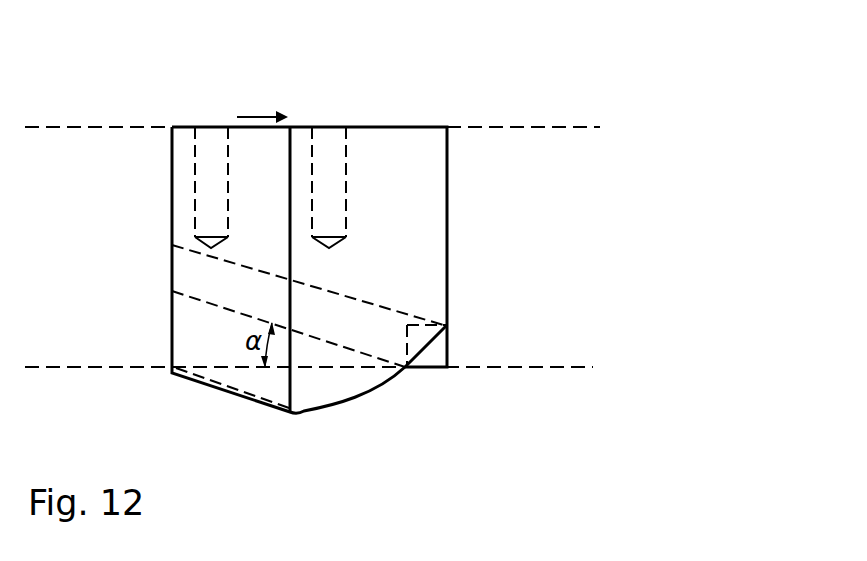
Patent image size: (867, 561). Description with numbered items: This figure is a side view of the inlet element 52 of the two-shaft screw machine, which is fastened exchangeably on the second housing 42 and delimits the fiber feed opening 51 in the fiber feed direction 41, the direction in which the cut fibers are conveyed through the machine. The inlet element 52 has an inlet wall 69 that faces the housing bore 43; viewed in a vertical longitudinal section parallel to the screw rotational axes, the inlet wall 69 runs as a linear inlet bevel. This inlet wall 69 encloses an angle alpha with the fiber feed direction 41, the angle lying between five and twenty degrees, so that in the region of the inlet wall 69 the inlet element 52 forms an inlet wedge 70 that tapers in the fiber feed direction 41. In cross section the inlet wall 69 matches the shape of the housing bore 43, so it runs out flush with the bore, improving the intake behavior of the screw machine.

The fiber feed opening 51 is at (80, 125).
The second housing 42 is at (127, 126).
The fiber feed direction 41 is at (257, 115).
The inlet element 52 is at (363, 124).
The inlet wall 69 is at (172, 292).
The inlet wedge 70 is at (214, 331).
The second housing bore 43 is at (553, 441).